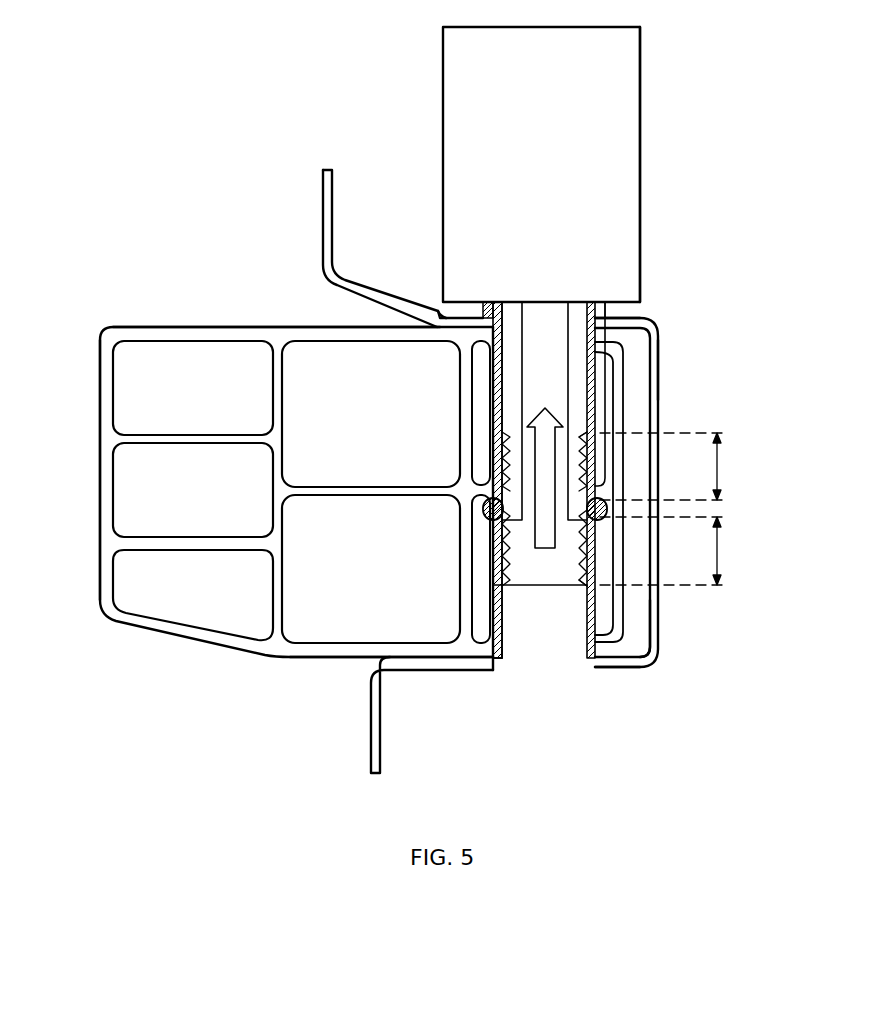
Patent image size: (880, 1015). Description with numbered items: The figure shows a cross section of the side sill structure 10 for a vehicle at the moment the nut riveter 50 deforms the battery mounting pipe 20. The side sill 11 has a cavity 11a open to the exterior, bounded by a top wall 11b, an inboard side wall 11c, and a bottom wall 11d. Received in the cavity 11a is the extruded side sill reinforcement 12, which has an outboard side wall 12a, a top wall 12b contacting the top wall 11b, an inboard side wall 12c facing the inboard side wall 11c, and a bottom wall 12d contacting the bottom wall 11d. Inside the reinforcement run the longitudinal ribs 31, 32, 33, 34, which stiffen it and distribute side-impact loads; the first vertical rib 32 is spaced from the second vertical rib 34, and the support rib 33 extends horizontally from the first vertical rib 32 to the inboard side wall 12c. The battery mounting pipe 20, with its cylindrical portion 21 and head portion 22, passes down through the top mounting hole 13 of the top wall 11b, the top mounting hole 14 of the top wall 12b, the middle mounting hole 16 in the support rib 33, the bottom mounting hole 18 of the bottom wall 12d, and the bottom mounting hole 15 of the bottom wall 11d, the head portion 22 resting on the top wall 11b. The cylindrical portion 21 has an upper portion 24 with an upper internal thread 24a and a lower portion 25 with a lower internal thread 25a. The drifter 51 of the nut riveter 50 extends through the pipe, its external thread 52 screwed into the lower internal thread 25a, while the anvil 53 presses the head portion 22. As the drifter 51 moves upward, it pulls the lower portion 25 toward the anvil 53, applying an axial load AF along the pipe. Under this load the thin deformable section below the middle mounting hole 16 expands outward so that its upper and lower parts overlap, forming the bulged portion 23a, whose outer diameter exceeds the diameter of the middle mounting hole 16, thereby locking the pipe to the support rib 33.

The side sill structure 10 is at (84, 80).
The side sill 11 is at (664, 358).
The cavity 11a is at (637, 630).
The top wall 11b is at (625, 322).
The inboard side wall 11c is at (657, 352).
The bottom wall 11d is at (615, 667).
The side sill reinforcement 12 is at (95, 455).
The outboard side wall 12a is at (99, 513).
The top wall 12b is at (320, 326).
The inboard side wall 12c is at (608, 594).
The bottom wall 12d is at (333, 655).
The top mounting hole 13 is at (585, 300).
The top mounting hole 14 is at (493, 342).
The bottom mounting hole 15 is at (495, 665).
The middle mounting hole 16 is at (493, 540).
The bottom mounting hole 18 is at (493, 630).
The battery mounting pipe 20 is at (493, 390).
The cylindrical portion 21 is at (557, 377).
The head portion 22 is at (445, 314).
The bulged portion 23a is at (628, 510).
The upper portion 24 is at (677, 466).
The upper internal thread 24a is at (583, 437).
The lower portion 25 is at (677, 551).
The lower internal thread 25a is at (588, 612).
The rib 31 is at (193, 445).
The first vertical rib 32 is at (282, 412).
The support rib 33 is at (375, 492).
The second vertical rib 34 is at (466, 412).
The nut riveter 50 is at (646, 190).
The drifter 51 is at (605, 448).
The external thread 52 is at (598, 548).
The anvil 53 is at (628, 244).
The axial load AF is at (545, 578).